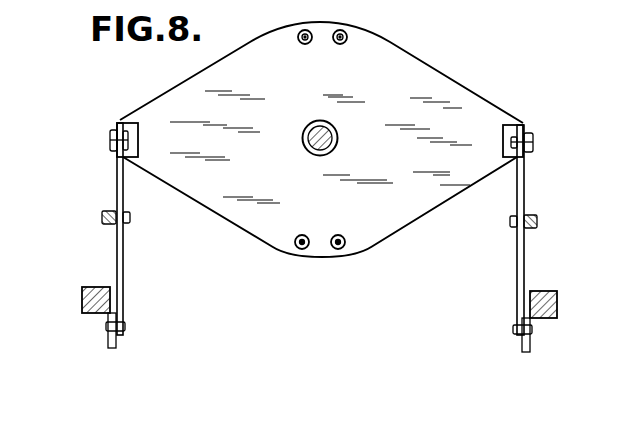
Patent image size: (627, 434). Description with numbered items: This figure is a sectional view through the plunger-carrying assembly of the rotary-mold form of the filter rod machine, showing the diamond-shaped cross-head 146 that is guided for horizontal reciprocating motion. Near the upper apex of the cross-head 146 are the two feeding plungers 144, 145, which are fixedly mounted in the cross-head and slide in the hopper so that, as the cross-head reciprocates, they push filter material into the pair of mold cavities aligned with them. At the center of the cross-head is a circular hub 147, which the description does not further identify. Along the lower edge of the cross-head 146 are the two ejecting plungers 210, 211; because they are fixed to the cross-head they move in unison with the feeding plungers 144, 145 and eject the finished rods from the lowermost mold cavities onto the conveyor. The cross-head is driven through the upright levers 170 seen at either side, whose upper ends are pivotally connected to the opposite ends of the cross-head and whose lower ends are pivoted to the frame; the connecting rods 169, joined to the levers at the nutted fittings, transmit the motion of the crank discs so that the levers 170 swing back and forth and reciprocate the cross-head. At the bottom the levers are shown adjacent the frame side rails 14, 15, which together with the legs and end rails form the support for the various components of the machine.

The cross-head 146 is at (438, 72).
The hub 147 is at (337, 139).
The feeding plunger 145 is at (303, 44).
The feeding plunger 144 is at (340, 44).
The ejecting plunger 210 is at (301, 235).
The ejecting plunger 211 is at (338, 235).
The lever 170 is at (117, 188).
The connecting rod 169 is at (110, 226).
The side rail 15 is at (82, 300).
The side rail 14 is at (557, 305).